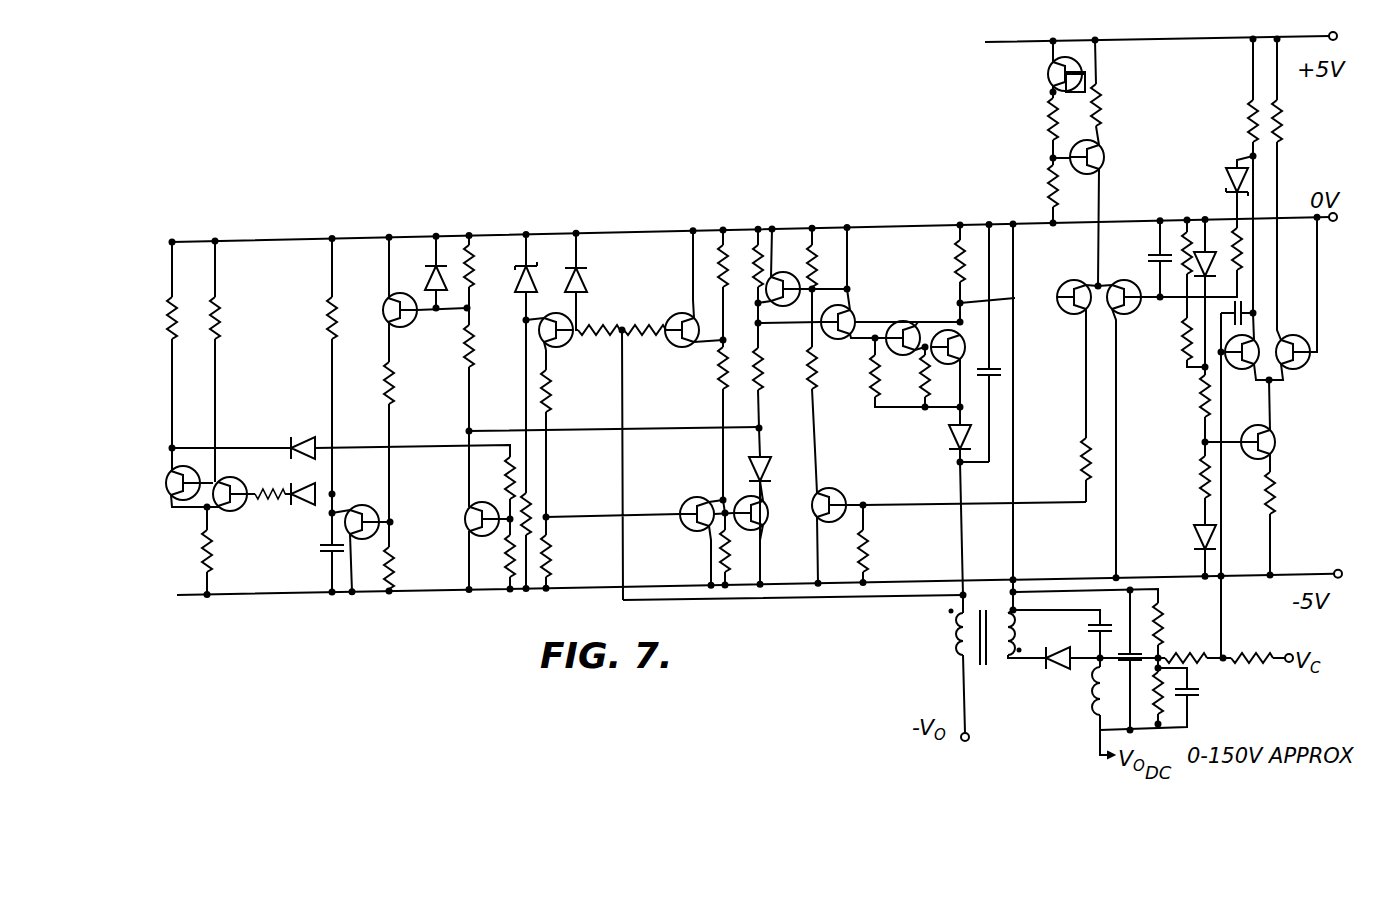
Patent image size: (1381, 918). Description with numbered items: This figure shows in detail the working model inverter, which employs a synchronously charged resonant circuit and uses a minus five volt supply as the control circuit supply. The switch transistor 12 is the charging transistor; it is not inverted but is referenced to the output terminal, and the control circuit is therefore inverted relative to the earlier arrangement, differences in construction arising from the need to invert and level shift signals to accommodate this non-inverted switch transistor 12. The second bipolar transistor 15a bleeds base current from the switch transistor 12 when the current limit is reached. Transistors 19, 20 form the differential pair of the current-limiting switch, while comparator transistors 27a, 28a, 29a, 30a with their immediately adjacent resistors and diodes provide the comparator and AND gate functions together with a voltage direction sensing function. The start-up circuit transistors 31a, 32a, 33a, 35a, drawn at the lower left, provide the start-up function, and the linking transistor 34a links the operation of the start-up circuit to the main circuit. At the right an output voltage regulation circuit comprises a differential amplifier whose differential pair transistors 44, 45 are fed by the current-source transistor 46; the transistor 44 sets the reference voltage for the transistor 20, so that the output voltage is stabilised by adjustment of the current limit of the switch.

The switch transistor 12 is at (925, 320).
The second bipolar transistor 15a is at (843, 306).
The differential amplifier transistor 19 is at (1077, 315).
The differential amplifier transistor 20 is at (1128, 314).
The comparator transistor 27a is at (570, 346).
The comparator transistor 28a is at (690, 498).
The comparator transistor 29a is at (764, 526).
The comparator transistor 30a is at (692, 347).
The start-up circuit transistor 31a is at (191, 500).
The start-up circuit transistor 32a is at (228, 511).
The start-up circuit transistor 33a is at (368, 497).
The linking transistor 34a is at (391, 299).
The start-up circuit transistor 35a is at (468, 509).
The differential pair transistor 44 is at (1246, 370).
The differential pair transistor 45 is at (1300, 368).
The current-source transistor 46 is at (1276, 443).